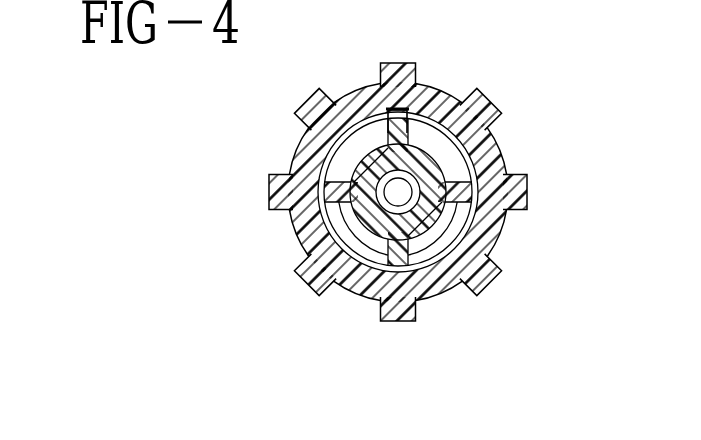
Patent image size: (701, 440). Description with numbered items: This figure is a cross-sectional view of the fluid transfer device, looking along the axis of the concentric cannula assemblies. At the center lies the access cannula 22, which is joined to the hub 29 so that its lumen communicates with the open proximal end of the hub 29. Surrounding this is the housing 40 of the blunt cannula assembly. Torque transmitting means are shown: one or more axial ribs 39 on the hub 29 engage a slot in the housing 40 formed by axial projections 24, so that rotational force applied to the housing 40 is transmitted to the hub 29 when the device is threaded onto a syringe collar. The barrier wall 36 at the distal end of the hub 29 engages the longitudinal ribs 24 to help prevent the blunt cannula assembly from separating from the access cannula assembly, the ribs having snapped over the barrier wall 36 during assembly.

The access cannula 22 is at (420, 205).
The axial projections 24 is at (416, 130).
The hub 29 is at (418, 210).
The barrier wall 36 is at (453, 164).
The axial ribs 39 is at (366, 166).
The housing 40 is at (460, 98).